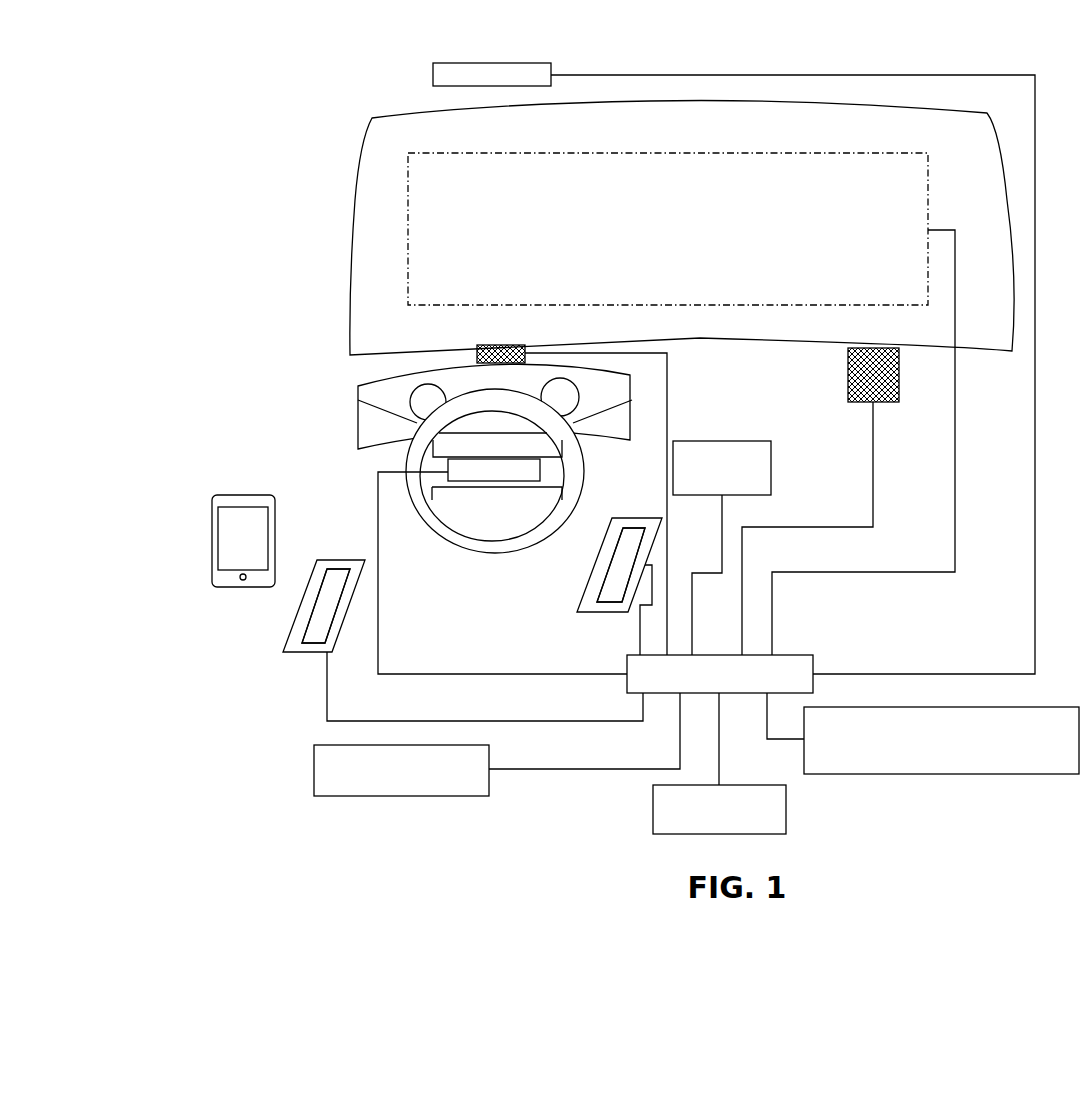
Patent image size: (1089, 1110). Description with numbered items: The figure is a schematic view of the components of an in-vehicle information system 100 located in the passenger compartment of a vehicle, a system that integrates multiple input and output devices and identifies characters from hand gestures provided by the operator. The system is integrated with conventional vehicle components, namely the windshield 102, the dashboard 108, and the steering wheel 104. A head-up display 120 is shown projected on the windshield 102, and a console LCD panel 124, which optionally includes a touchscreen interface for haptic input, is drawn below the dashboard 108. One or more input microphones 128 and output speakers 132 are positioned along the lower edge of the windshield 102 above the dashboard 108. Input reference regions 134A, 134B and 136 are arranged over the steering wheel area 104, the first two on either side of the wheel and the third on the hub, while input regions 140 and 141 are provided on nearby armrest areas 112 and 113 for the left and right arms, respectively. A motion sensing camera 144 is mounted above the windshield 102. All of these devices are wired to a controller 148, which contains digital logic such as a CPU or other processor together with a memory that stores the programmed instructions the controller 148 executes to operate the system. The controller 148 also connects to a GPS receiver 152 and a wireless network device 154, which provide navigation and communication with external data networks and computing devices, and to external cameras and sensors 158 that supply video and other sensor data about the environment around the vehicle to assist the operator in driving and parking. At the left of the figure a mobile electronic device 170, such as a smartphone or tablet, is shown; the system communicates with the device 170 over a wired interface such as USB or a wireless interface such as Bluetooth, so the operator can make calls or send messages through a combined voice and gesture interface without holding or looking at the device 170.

The in-vehicle information system 100 is at (263, 193).
The windshield 102 is at (353, 200).
The steering wheel 104 is at (512, 553).
The dashboard 108 is at (358, 440).
The armrest area 112 is at (335, 632).
The armrest area 113 is at (584, 583).
The head-up display 120 is at (705, 153).
The console LCD panel 124 is at (750, 441).
The input microphone 128 is at (477, 351).
The output speaker 132 is at (880, 404).
The input reference region 134A is at (378, 404).
The input reference region 134B is at (578, 428).
The input reference region 136 is at (378, 474).
The input region 140 is at (333, 612).
The input region 141 is at (636, 528).
The motion sensing camera 144 is at (502, 63).
The controller 148 is at (788, 655).
The GPS receiver 152 is at (652, 815).
The wireless network device 154 is at (866, 775).
The external cameras and sensors 158 is at (398, 797).
The mobile electronic device 170 is at (212, 543).